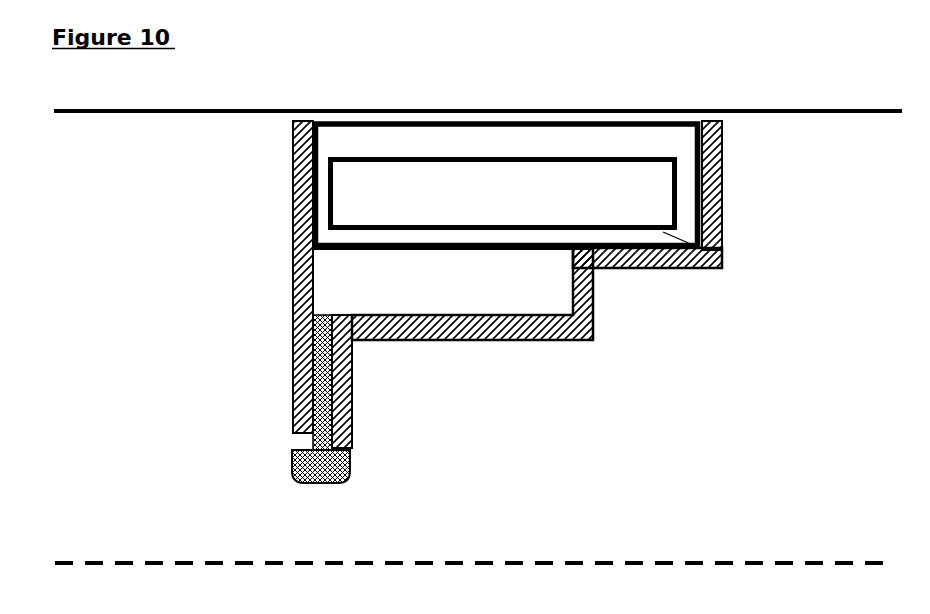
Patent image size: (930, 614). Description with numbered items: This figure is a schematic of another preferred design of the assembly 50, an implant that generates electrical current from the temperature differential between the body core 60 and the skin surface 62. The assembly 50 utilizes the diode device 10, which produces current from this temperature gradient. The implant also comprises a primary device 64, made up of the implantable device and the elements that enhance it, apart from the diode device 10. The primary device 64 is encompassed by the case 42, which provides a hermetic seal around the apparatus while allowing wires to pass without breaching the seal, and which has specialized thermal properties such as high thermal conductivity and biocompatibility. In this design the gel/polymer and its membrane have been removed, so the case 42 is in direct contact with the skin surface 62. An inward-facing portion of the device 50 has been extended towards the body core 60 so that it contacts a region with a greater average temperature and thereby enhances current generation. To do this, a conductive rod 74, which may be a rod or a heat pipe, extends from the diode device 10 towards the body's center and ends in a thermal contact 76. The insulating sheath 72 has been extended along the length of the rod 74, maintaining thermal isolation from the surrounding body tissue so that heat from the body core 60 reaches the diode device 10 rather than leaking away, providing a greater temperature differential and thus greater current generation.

The diode device 10 is at (497, 305).
The case 42 is at (722, 268).
The assembly 50 is at (770, 331).
The body core 60 is at (728, 560).
The skin surface 62 is at (762, 109).
The primary device 64 is at (593, 232).
The insulating sheath 72 is at (293, 207).
The conductive rod 74 is at (293, 404).
The thermal contact 76 is at (302, 480).